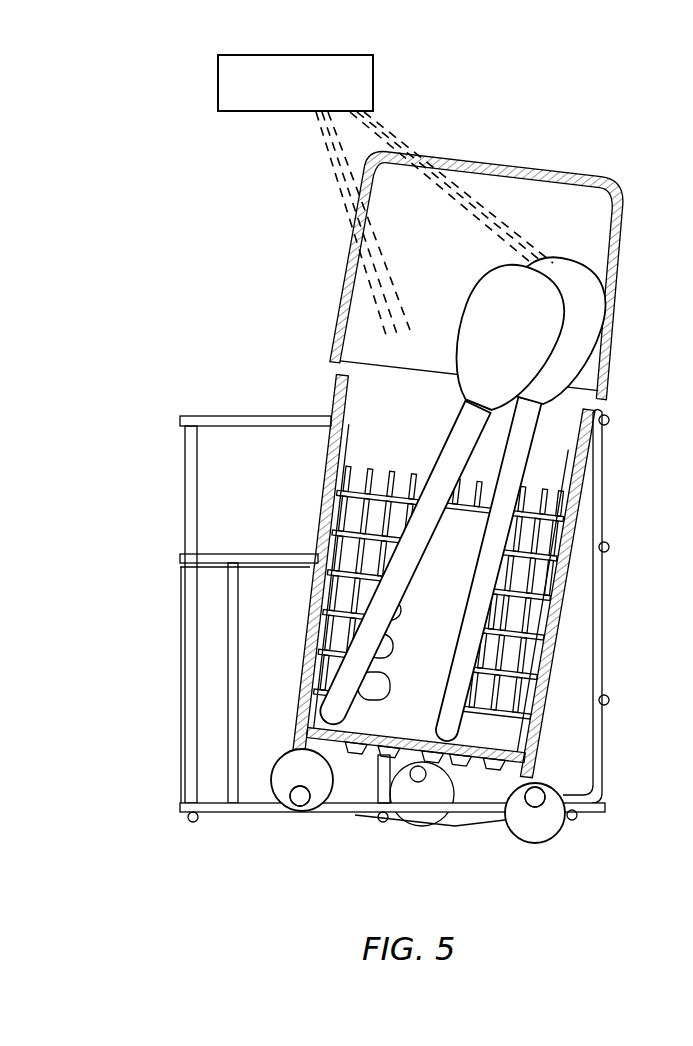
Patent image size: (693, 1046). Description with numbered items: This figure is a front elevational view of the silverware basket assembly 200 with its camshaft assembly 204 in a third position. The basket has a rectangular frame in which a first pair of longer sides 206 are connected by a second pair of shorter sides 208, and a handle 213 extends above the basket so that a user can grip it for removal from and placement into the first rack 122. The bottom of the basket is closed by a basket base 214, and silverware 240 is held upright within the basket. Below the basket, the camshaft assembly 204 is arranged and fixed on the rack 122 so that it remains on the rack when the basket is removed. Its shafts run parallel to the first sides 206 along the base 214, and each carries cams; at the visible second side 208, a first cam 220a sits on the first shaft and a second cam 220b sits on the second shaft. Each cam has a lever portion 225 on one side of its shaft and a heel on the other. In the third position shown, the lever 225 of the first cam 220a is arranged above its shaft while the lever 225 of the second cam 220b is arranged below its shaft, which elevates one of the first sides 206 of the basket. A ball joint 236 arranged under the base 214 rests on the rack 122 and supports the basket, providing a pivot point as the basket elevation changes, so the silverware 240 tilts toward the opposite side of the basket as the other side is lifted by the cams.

The silverware basket assembly 200 is at (516, 106).
The handle 213 is at (532, 172).
The silverware 240 is at (463, 346).
The first pair of sides 206 is at (322, 497).
The second pair of sides 208 is at (437, 600).
The lever portion 225 is at (272, 762).
The first cam 220a is at (262, 775).
The second cam 220b is at (566, 838).
The first rack 122 is at (213, 817).
The basket base 214 is at (375, 752).
The camshaft assembly 204 is at (383, 849).
The ball joint 236 is at (426, 792).